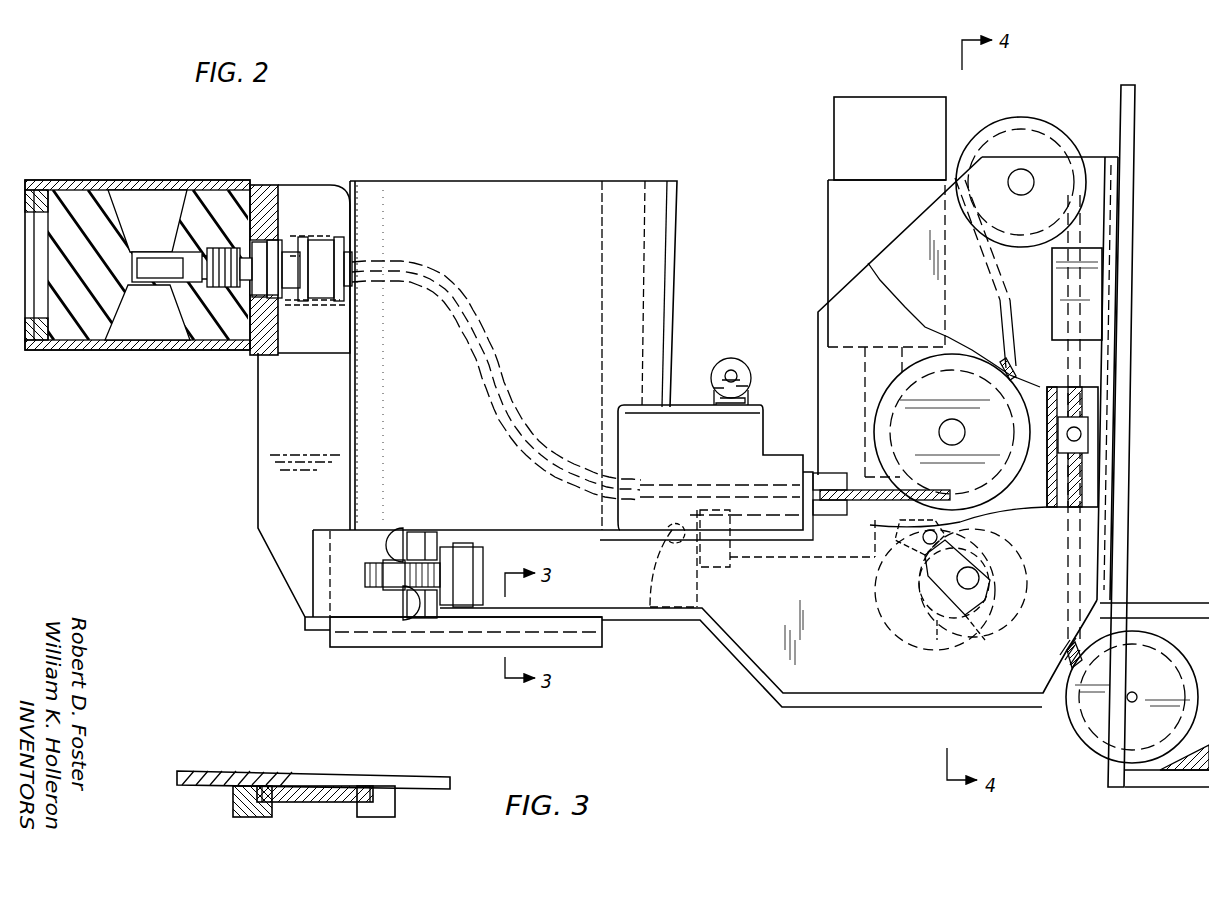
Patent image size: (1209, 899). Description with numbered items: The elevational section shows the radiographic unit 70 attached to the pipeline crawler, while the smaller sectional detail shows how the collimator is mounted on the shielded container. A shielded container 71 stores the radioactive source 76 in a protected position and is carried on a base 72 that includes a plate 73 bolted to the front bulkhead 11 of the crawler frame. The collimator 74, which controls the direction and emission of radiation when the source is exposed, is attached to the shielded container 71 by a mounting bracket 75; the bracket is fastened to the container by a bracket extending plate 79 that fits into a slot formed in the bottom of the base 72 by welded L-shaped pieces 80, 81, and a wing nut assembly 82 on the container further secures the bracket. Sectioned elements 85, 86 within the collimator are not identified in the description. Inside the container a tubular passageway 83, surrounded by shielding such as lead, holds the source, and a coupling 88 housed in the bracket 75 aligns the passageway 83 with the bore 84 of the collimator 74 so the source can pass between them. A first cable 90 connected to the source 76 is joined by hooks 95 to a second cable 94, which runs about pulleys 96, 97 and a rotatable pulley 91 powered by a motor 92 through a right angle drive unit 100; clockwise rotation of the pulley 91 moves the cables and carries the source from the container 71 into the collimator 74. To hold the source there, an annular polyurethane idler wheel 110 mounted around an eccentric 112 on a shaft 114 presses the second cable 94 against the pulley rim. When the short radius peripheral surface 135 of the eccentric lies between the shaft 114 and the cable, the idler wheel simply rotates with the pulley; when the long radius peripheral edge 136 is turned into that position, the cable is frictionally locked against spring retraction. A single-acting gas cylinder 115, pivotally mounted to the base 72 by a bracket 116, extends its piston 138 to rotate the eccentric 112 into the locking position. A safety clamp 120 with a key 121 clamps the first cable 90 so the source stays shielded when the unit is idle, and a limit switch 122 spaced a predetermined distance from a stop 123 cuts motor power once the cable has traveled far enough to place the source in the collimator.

In FIG. 2, the front bulkhead 11 is at (1130, 105).
In FIG. 2, the radiographic unit 70 is at (250, 473).
In FIG. 2, the shielded container 71 is at (566, 192).
In FIG. 2, the base 72 is at (822, 712).
In FIG. 3, the base 72 is at (325, 772).
In FIG. 2, the plate 73 is at (1108, 475).
In FIG. 2, the collimator 74 is at (193, 182).
In FIG. 2, the mounting bracket 75 is at (280, 418).
In FIG. 2, the radioactive source 76 is at (143, 273).
In FIG. 2, the bracket extending plate 79 is at (348, 625).
In FIG. 3, the bracket extending plate 79 is at (306, 803).
In FIG. 3, the L-shaped piece 80 is at (397, 806).
In FIG. 3, the L-shaped piece 81 is at (226, 808).
In FIG. 2, the wing nut assembly 82 is at (394, 546).
In FIG. 2, the tubular passageway 83 is at (570, 436).
In FIG. 2, the bore 84 is at (193, 292).
In FIG. 2, the upper die 85 is at (132, 196).
In FIG. 2, the lower die 86 is at (148, 330).
In FIG. 2, the coupling 88 is at (313, 243).
In FIG. 2, the first cable 90 is at (413, 248).
In FIG. 2, the pulley 91 is at (900, 388).
In FIG. 2, the motor 92 is at (866, 95).
In FIG. 2, the second cable 94 is at (523, 398).
In FIG. 2, the hooks 95 is at (450, 288).
In FIG. 2, the pulley 96 is at (1030, 130).
In FIG. 2, the pulley 97 is at (1088, 712).
In FIG. 2, the right angle drive unit 100 is at (876, 402).
In FIG. 2, the idler wheel 110 is at (876, 622).
In FIG. 2, the eccentric 112 is at (937, 642).
In FIG. 2, the shaft 114 is at (981, 580).
In FIG. 2, the gas cylinder 115 is at (990, 548).
In FIG. 2, the bracket 116 is at (670, 554).
In FIG. 2, the safety clamp 120 is at (686, 425).
In FIG. 2, the key 121 is at (744, 366).
In FIG. 2, the limit switch 122 is at (1082, 434).
In FIG. 2, the stop 123 is at (1080, 292).
In FIG. 2, the short radius peripheral surface 135 is at (983, 642).
In FIG. 2, the long radius peripheral edge 136 is at (906, 637).
In FIG. 2, the piston 138 is at (892, 590).